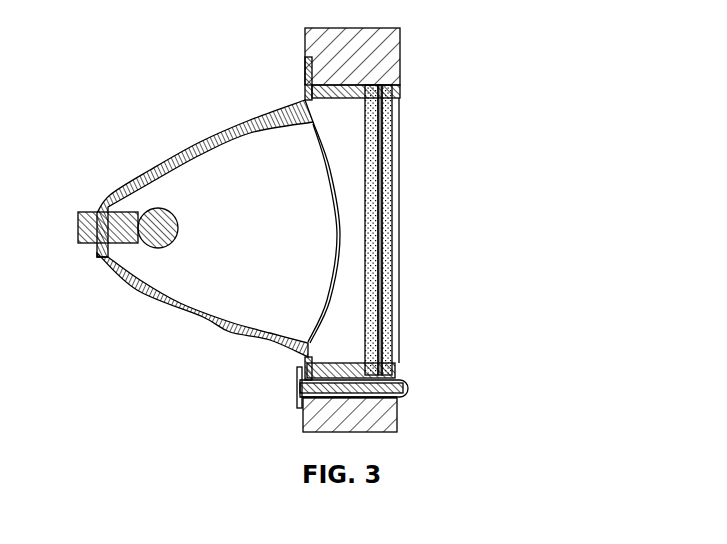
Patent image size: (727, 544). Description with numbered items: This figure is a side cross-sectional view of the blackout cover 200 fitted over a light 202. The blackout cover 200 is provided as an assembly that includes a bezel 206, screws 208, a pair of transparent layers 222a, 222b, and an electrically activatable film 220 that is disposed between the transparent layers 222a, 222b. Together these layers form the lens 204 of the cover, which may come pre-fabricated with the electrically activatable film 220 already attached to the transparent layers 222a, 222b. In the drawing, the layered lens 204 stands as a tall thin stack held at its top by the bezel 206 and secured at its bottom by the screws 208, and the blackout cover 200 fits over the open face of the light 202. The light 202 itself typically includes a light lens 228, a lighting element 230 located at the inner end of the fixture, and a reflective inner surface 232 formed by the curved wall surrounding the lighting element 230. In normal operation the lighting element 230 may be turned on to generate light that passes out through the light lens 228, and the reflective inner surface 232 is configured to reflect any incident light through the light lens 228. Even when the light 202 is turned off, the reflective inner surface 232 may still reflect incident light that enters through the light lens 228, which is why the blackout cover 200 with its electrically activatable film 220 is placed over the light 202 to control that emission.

The blackout cover 200 is at (335, 216).
The light 202 is at (218, 225).
The lens 204 is at (432, 221).
The bezel 206 is at (380, 28).
The screws 208 is at (405, 386).
The electrically activatable film 220 is at (383, 308).
The transparent layer 222a is at (377, 153).
The transparent layer 222b is at (392, 197).
The light lens 228 is at (298, 362).
The lighting element 230 is at (157, 222).
The reflective inner surface 232 is at (203, 312).